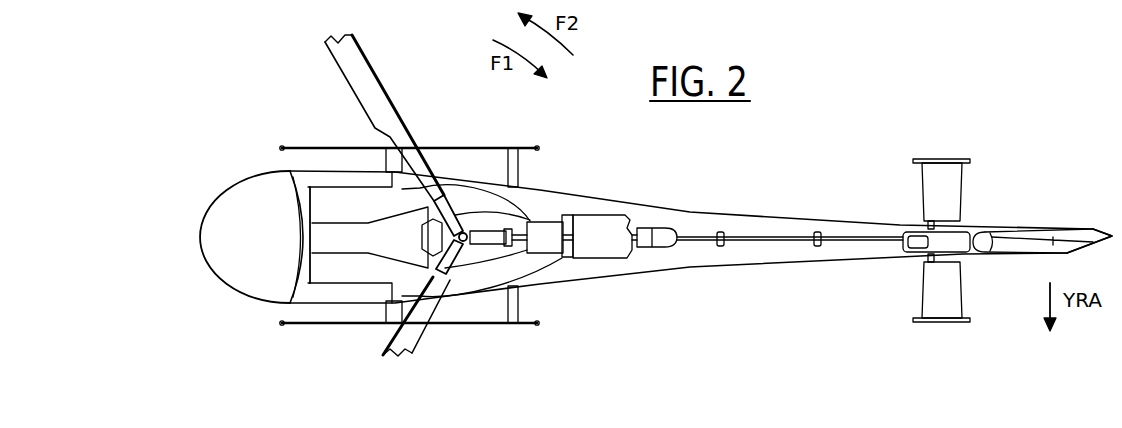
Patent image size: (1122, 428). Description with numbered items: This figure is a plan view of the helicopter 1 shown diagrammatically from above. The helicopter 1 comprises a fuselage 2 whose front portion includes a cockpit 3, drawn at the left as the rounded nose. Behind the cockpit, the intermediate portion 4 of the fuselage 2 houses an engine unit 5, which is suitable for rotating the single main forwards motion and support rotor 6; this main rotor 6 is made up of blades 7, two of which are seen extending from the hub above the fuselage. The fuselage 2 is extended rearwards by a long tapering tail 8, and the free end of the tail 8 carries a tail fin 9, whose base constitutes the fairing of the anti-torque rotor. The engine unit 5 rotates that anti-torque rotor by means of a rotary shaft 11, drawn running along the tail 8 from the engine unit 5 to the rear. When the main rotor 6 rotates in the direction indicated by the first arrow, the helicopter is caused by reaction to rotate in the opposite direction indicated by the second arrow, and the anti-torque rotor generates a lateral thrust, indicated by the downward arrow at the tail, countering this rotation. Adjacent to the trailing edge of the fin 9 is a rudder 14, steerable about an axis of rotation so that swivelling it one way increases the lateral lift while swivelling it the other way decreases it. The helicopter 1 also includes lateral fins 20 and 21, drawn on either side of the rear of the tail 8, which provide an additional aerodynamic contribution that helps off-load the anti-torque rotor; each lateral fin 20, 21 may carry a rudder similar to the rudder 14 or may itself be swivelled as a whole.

The helicopter 1 is at (674, 191).
The fuselage 2 is at (543, 207).
The cockpit 3 is at (260, 197).
The intermediate portion 4 is at (477, 277).
The engine unit 5 is at (513, 253).
The main rotor 6 is at (409, 111).
The blades 7 is at (345, 63).
The tail 8 is at (732, 257).
The tail fin 9 is at (997, 243).
The rotary shaft 11 is at (793, 235).
The rudder 14 is at (1088, 237).
The lateral fin 20 is at (920, 327).
The lateral fin 21 is at (947, 161).